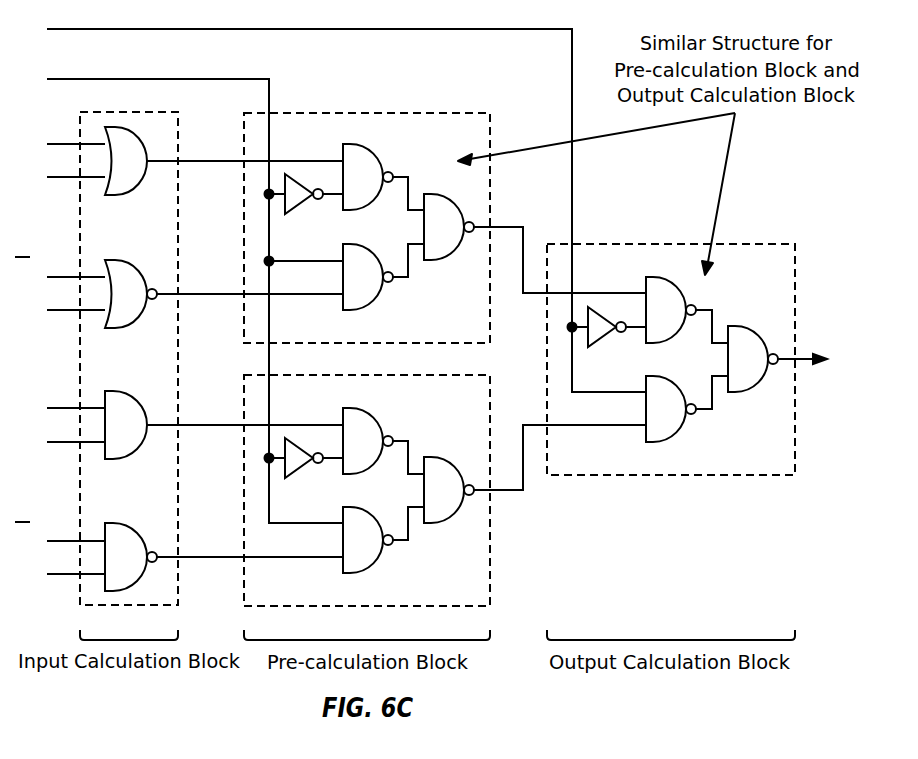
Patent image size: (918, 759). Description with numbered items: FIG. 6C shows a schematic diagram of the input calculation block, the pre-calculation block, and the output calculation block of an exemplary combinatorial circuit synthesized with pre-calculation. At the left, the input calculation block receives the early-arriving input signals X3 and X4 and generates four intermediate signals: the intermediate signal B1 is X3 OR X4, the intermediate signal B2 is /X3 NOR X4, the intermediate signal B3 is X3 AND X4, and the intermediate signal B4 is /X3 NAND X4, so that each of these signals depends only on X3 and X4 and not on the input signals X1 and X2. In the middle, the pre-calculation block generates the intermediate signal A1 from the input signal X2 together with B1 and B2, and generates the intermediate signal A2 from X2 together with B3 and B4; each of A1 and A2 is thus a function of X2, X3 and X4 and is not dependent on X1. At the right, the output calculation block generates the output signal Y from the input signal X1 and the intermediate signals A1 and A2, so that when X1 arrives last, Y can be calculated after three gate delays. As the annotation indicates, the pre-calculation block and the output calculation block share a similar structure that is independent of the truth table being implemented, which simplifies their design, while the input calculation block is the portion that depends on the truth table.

The input signal X1 is at (330, 204).
The input signal X2 is at (179, 295).
The input signal X3 is at (60, 343).
The input signal X4 is at (60, 381).
The intermediate signal B1 is at (224, 158).
The intermediate signal B2 is at (224, 292).
The intermediate signal B3 is at (224, 425).
The intermediate signal B4 is at (224, 557).
The intermediate signal A1 is at (494, 227).
The intermediate signal A2 is at (494, 490).
The output signal Y is at (750, 359).